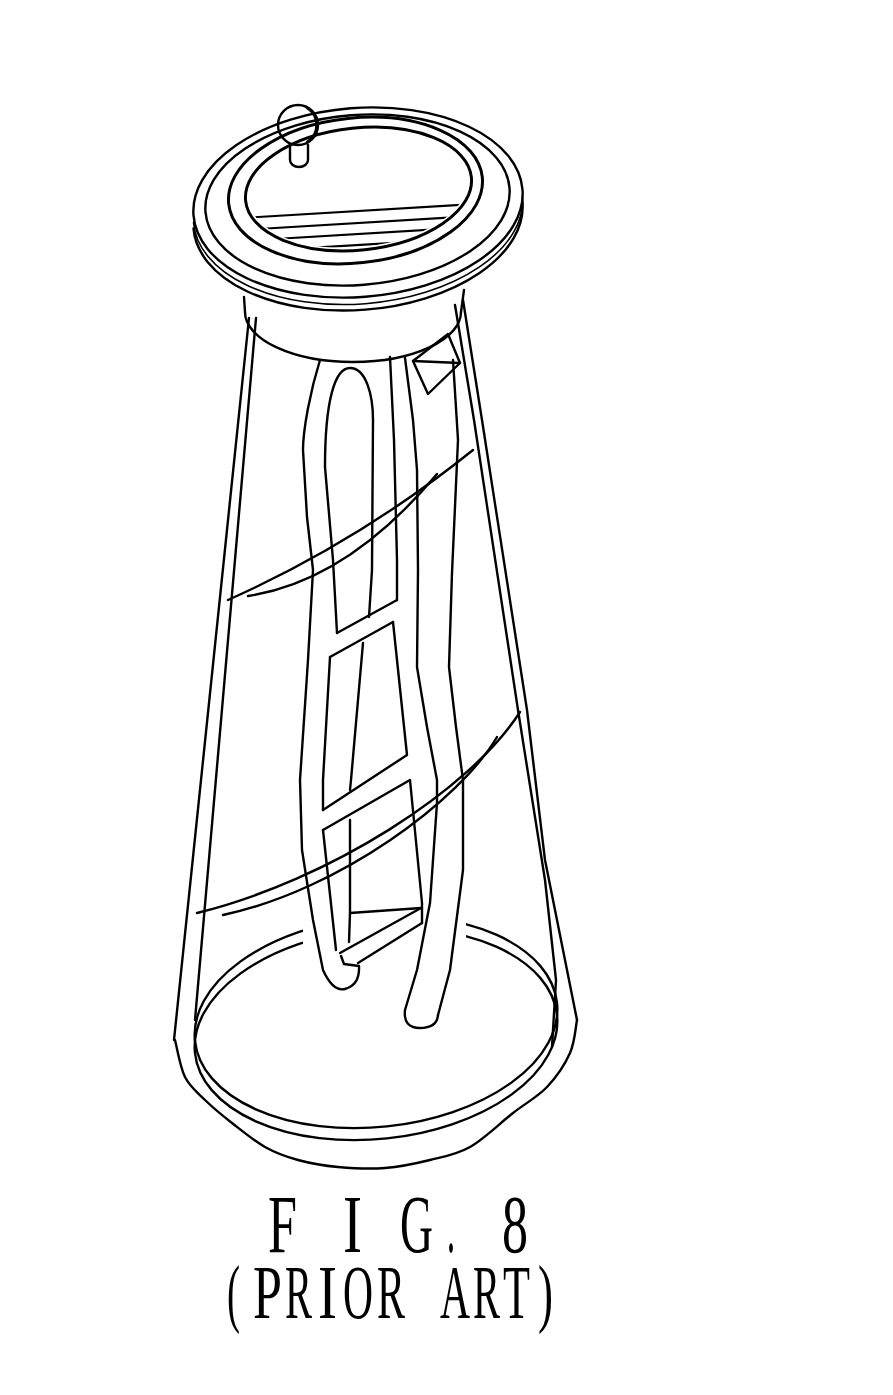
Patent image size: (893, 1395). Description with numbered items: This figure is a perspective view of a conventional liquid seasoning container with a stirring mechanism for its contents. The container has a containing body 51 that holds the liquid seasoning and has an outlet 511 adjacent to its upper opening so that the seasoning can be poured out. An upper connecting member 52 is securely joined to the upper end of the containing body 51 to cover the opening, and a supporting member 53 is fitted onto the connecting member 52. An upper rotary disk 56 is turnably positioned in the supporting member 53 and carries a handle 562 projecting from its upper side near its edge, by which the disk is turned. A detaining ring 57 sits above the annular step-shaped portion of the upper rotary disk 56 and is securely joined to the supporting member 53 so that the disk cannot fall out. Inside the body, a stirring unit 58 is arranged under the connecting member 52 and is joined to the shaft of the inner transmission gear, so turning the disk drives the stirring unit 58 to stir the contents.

The containing body 51 is at (524, 708).
The outlet 511 is at (431, 380).
The upper connecting member 52 is at (433, 310).
The supporting member 53 is at (203, 258).
The upper rotary disk 56 is at (415, 165).
The handle 562 is at (285, 117).
The detaining ring 57 is at (472, 167).
The stirring unit 58 is at (308, 430).